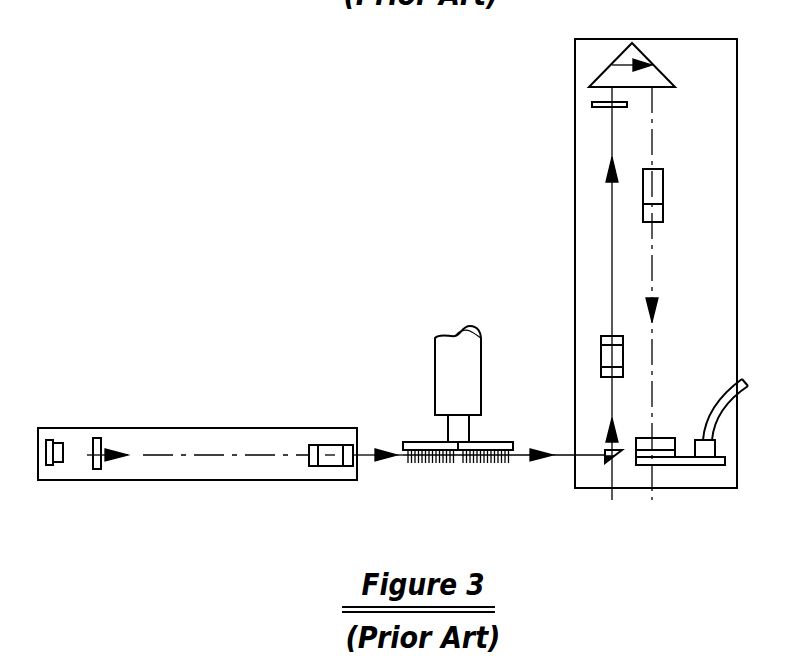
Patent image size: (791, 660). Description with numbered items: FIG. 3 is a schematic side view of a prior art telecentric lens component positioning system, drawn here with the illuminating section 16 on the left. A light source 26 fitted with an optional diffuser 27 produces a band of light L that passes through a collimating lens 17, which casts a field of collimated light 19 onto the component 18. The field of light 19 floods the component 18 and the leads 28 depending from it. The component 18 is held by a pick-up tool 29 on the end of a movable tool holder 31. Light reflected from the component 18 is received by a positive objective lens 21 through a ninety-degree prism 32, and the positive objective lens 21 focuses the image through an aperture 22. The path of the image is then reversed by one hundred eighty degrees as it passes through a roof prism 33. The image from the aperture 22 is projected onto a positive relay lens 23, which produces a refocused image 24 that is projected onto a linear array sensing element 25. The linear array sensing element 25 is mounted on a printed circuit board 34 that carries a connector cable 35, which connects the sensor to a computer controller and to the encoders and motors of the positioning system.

The laser 16 is at (217, 388).
The collimating lens 17 is at (332, 466).
The component 18 is at (491, 442).
The field of light 19 is at (367, 460).
The positive objective lens 21 is at (601, 345).
The aperture 22 is at (594, 105).
The positive relay lens 23 is at (663, 180).
The refocused image 24 is at (655, 133).
The linear array sensing element 25 is at (667, 438).
The light source 26 is at (52, 440).
The diffuser 27 is at (93, 468).
The leads 28 is at (478, 462).
The pick-up tool 29 is at (448, 428).
The movable tool holder 31 is at (437, 347).
The 90° prism 32 is at (612, 464).
The 180° roof prism 33 is at (663, 73).
The printed circuit board 34 is at (683, 465).
The connector cable 35 is at (724, 407).
The band of light L is at (176, 454).